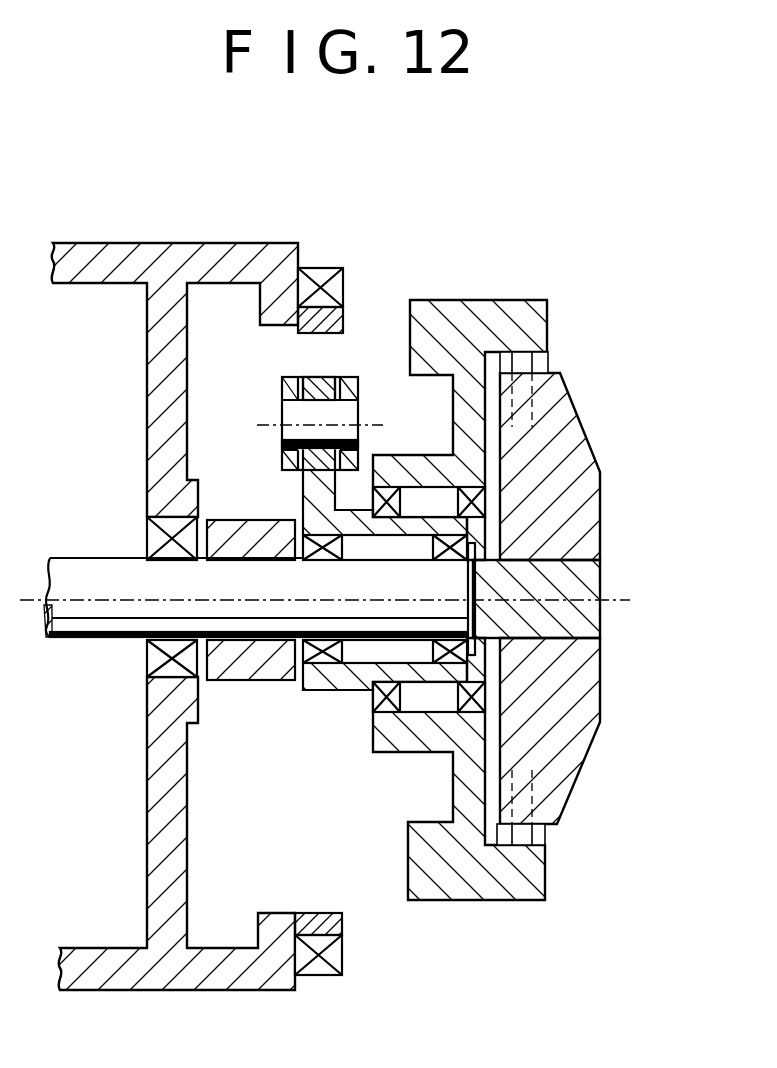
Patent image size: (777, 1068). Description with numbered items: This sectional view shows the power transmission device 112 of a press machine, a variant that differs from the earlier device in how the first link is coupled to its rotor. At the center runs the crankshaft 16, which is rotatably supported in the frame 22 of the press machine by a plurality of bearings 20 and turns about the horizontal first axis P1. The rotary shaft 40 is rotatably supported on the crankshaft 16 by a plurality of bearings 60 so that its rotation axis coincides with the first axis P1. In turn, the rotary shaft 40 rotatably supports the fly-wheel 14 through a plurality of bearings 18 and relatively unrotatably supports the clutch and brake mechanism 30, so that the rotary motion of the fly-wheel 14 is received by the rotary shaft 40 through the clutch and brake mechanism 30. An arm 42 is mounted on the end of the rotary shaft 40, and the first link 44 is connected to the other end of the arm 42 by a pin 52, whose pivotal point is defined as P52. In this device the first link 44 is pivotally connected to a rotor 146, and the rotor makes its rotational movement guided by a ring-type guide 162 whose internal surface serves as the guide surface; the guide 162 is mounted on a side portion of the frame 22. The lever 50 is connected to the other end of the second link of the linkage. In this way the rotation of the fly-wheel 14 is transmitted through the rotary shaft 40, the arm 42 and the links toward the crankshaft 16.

The fly-wheel 14 is at (495, 300).
The crankshaft 16 is at (90, 628).
The bearings 18 is at (482, 500).
The bearings 20 is at (155, 540).
The frame 22 is at (123, 242).
The clutch and brake mechanism 30 is at (592, 528).
The rotary shaft 40 is at (580, 573).
The arm 42 is at (322, 377).
The first link 44 is at (293, 470).
The lever 50 is at (243, 667).
The pin 52 is at (283, 410).
The bearings 60 is at (325, 657).
The power transmission device 112 is at (378, 278).
The rotor 146 is at (303, 337).
The ring-type guide 162 is at (325, 267).
The first axis P1 is at (627, 600).
The pivotal point P52 is at (362, 422).